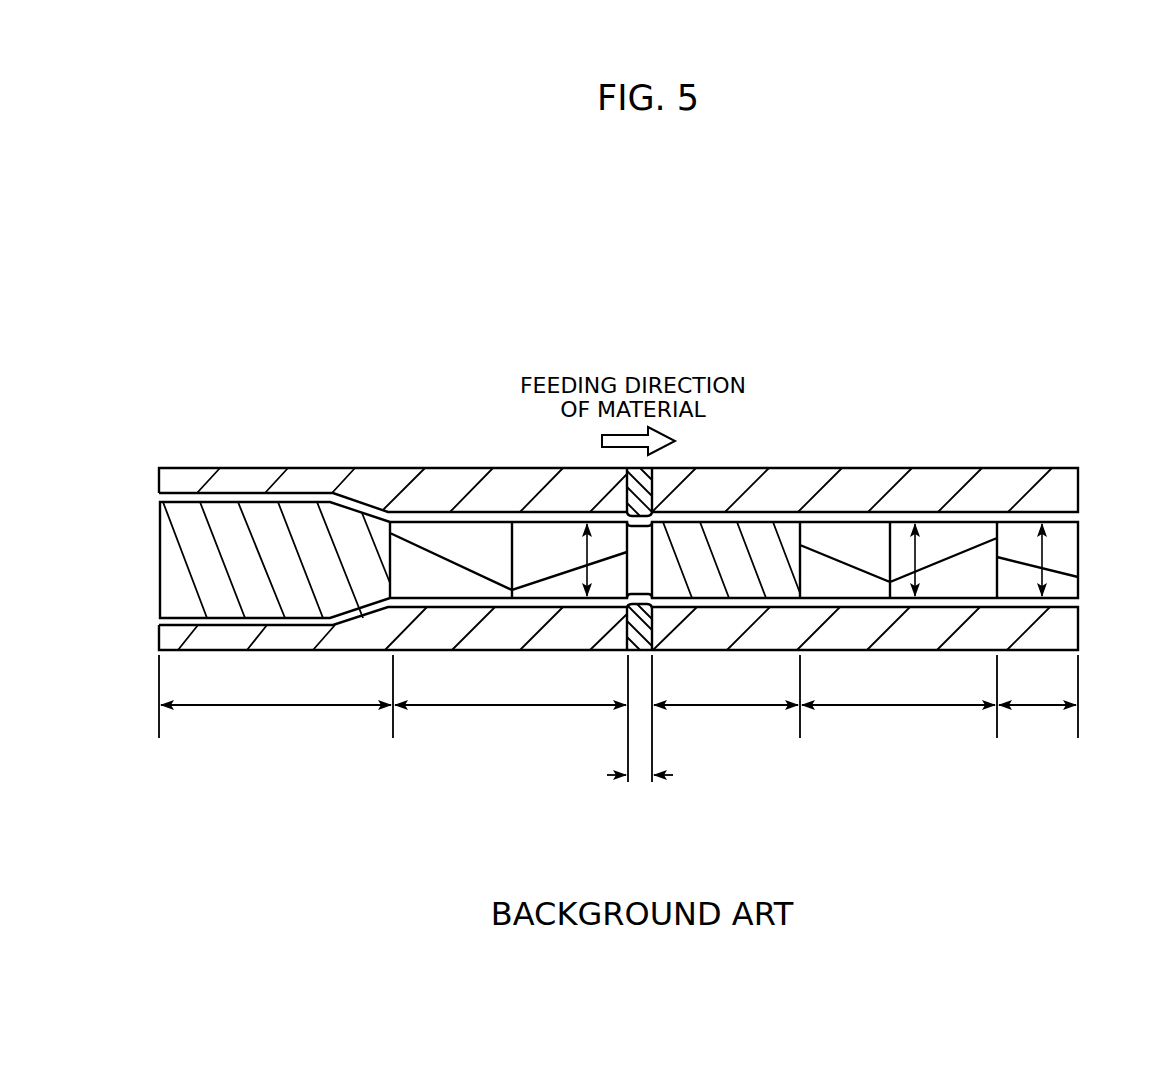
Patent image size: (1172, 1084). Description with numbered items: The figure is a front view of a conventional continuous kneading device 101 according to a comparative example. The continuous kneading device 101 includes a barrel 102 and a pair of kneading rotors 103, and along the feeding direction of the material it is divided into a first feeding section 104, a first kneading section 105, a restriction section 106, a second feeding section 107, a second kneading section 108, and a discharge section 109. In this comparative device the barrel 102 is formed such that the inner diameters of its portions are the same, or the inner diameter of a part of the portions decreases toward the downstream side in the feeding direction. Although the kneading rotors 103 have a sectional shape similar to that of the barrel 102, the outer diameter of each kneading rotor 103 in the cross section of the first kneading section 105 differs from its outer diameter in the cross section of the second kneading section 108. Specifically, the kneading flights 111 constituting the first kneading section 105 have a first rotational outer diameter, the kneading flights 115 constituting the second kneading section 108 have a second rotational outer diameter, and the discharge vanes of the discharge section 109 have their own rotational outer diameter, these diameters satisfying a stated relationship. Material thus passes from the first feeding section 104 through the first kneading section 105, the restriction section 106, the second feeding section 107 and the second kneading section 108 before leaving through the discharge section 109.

The continuous kneading device 101 is at (881, 290).
The barrel 102 is at (1050, 478).
The kneading rotor 103 is at (1072, 540).
The first feeding section 104 is at (276, 714).
The first kneading section 105 is at (510, 714).
The restriction section 106 is at (639, 816).
The second feeding section 107 is at (726, 722).
The second kneading section 108 is at (898, 722).
The discharge section 109 is at (1037, 713).
The kneading flight 111 is at (447, 558).
The kneading flight 115 is at (953, 552).